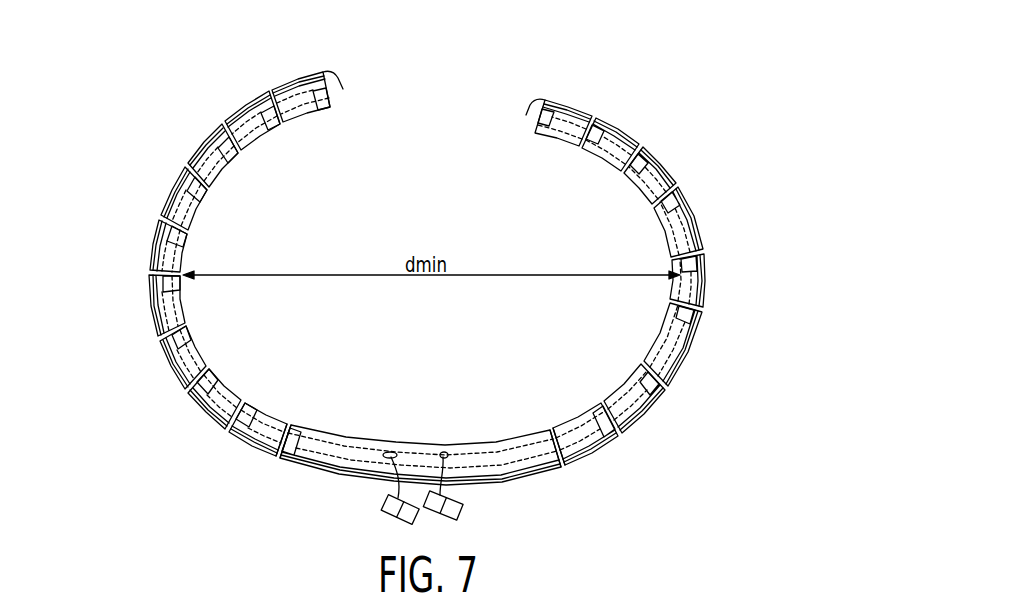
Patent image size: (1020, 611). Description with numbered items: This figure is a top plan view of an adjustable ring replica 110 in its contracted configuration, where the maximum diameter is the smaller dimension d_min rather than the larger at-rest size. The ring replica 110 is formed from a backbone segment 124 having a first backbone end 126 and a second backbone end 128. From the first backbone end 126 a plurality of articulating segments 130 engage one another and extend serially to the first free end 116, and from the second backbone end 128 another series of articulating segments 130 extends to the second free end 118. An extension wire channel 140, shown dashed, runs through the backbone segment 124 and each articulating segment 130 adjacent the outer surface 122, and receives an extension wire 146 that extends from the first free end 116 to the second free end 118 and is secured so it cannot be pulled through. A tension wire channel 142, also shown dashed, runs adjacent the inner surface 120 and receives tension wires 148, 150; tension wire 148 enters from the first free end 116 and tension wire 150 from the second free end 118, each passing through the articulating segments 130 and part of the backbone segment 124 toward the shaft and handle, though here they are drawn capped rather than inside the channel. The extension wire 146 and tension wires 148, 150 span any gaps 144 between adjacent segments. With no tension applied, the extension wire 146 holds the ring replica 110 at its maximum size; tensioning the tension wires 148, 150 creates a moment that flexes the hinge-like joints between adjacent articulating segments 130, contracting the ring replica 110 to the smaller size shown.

The adjustable ring replica 110 is at (523, 80).
The first free end 116 is at (333, 105).
The second free end 118 is at (532, 131).
The inner surface 120 is at (227, 382).
The outer surface 122 is at (168, 358).
The backbone segment 124 is at (513, 463).
The first backbone end 126 is at (287, 424).
The second backbone end 128 is at (556, 440).
The articulating segments 130 is at (207, 139).
The extension wire channel 140 is at (224, 418).
The tension wire channel 142 is at (265, 417).
The gaps 144 is at (675, 188).
The extension wire 146 is at (343, 81).
The tension wire 148 is at (390, 494).
The tension wire 150 is at (456, 488).